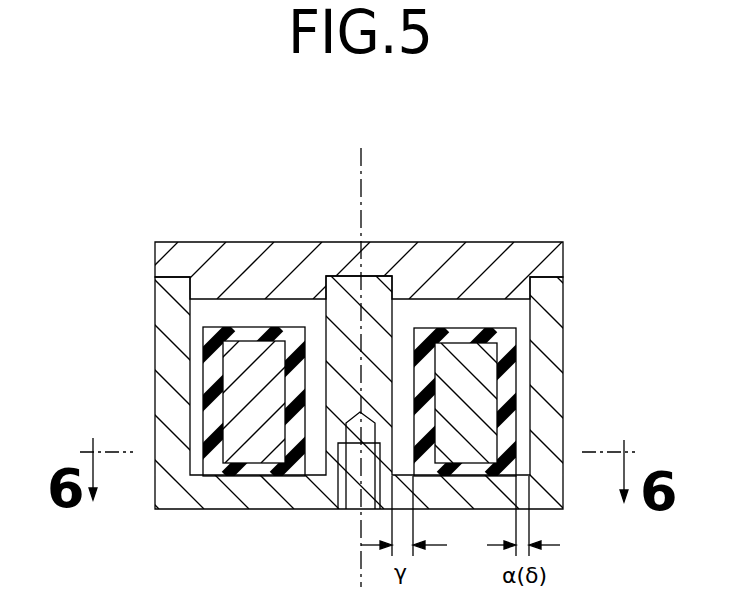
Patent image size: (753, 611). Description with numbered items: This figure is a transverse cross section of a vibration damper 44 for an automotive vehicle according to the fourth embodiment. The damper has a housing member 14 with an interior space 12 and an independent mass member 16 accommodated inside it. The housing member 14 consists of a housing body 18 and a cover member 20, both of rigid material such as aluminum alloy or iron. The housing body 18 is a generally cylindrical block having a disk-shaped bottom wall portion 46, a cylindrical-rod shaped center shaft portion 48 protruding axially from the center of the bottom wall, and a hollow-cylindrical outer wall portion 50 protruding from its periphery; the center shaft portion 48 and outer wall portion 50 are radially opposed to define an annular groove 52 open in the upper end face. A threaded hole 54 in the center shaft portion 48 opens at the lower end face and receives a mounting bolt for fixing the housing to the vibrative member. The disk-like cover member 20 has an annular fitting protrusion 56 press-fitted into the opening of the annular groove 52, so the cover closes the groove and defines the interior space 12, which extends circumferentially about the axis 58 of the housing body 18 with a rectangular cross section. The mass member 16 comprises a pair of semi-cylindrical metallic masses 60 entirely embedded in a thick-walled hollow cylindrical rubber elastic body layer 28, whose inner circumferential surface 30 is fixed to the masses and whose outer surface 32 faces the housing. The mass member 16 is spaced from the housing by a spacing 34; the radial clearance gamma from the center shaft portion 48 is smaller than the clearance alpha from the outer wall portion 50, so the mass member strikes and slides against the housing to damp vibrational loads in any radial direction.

The interior space 12 is at (507, 314).
The housing member 14 is at (153, 270).
The independent mass member 16 is at (240, 325).
The housing body 18 is at (153, 341).
The cover member 20 is at (462, 255).
The rubber elastic body layer 28 is at (210, 370).
The inner circumferential surface 30 is at (228, 428).
The outer surface 32 is at (518, 433).
The spacing 34 is at (522, 342).
The vibration damper 44 is at (548, 187).
The bottom wall portion 46 is at (252, 495).
The center shaft portion 48 is at (400, 276).
The outer wall portion 50 is at (172, 410).
The annular groove 52 is at (272, 312).
The threaded hole 54 is at (350, 490).
The fitting protrusion 56 is at (512, 292).
The axis 58 is at (362, 180).
The metallic masses 60 is at (263, 434).